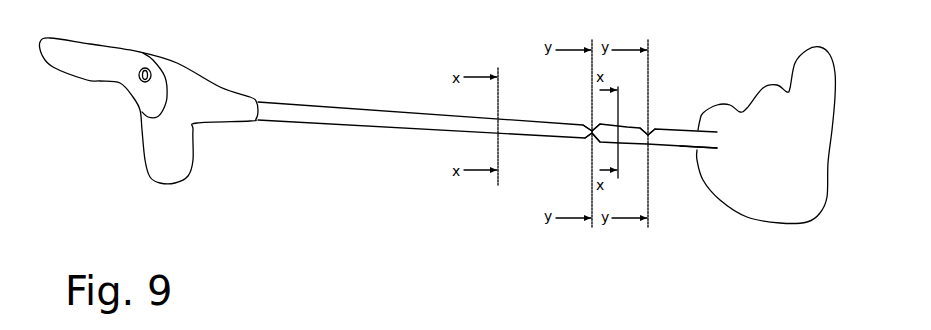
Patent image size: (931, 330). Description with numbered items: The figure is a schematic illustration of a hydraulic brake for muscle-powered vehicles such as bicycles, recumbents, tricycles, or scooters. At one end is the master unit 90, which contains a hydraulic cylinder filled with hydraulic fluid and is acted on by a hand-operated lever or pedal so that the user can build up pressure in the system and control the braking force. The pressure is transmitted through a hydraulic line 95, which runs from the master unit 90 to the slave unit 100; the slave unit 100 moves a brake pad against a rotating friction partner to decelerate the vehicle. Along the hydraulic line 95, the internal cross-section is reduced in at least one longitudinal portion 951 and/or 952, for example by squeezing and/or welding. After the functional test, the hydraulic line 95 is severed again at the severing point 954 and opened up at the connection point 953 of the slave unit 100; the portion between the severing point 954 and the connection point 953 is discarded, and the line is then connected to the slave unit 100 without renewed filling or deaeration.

The master unit 90 is at (140, 142).
The hydraulic line 95 is at (380, 118).
The longitudinal portion 951 is at (592, 137).
The longitudinal portion 952 is at (650, 133).
The connection point 953 is at (694, 148).
The severing point 954 is at (586, 127).
The slave unit 100 is at (765, 207).